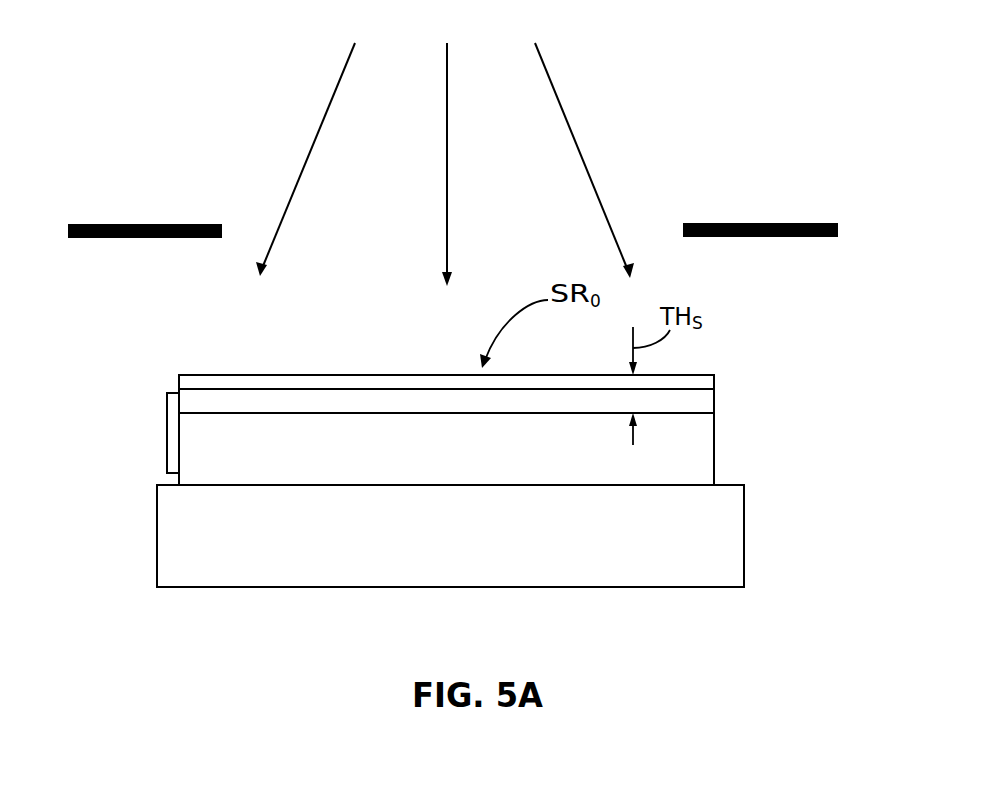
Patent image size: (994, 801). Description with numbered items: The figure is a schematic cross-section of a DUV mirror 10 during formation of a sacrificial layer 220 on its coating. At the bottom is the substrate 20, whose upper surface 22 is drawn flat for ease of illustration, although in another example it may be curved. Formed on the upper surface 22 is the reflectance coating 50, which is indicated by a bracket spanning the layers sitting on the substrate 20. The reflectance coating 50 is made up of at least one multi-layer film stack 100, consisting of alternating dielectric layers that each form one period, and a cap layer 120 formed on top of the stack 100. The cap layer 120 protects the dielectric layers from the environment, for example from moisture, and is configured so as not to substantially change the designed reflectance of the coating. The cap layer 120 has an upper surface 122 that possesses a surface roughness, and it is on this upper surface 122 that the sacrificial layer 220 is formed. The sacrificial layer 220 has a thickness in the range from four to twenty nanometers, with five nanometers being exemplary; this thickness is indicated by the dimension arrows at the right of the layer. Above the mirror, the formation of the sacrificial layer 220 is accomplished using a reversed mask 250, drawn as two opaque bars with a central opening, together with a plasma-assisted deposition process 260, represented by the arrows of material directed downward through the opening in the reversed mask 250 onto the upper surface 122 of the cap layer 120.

The DUV mirror 10 is at (440, 382).
The substrate 20 is at (157, 545).
The upper surface 22 is at (158, 484).
The reflectance coating 50 is at (167, 435).
The multi-layer film stack 100 is at (479, 466).
The cap layer 120 is at (714, 405).
The upper surface of cap layer 122 is at (298, 389).
The sacrificial layer 220 is at (714, 381).
The reversed mask 250 is at (140, 223).
The plasma-assisted deposition process 260 is at (605, 108).